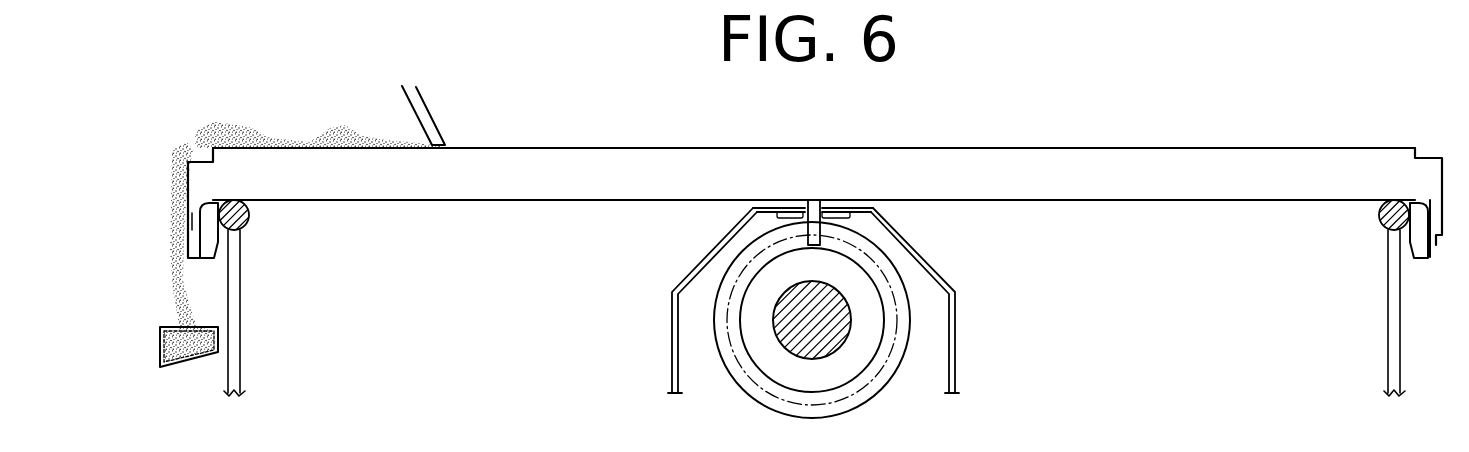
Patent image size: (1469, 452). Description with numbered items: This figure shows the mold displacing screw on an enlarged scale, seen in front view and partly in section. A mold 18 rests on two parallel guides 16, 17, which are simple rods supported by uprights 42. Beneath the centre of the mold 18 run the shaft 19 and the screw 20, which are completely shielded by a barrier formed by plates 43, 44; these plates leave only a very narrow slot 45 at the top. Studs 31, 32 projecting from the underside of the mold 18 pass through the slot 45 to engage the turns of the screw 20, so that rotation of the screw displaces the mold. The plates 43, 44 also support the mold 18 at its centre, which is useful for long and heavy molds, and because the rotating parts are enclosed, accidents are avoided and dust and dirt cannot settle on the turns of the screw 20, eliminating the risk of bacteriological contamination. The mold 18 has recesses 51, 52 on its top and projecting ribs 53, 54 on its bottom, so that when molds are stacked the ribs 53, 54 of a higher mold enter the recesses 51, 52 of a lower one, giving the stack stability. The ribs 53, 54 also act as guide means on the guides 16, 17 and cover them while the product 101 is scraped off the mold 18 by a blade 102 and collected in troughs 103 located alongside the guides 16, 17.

The guide 16 is at (248, 222).
The guide 17 is at (1380, 223).
The mold 18 is at (906, 169).
The shaft 19 is at (827, 338).
The screw 20 is at (760, 388).
The stud 31 is at (819, 170).
The stud 32 is at (811, 212).
The upright 42 is at (239, 361).
The plate 43 is at (670, 298).
The plate 44 is at (960, 298).
The slot 45 is at (803, 199).
The recess 51 is at (197, 158).
The recess 52 is at (1427, 158).
The rib 53 is at (1438, 242).
The rib 54 is at (210, 230).
The product 101 is at (197, 297).
The blade 102 is at (428, 127).
The trough 103 is at (195, 364).